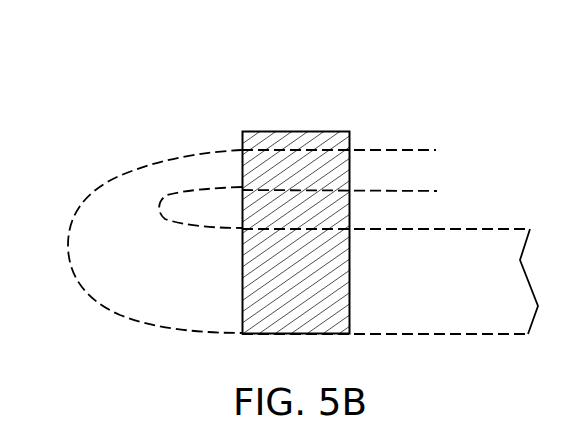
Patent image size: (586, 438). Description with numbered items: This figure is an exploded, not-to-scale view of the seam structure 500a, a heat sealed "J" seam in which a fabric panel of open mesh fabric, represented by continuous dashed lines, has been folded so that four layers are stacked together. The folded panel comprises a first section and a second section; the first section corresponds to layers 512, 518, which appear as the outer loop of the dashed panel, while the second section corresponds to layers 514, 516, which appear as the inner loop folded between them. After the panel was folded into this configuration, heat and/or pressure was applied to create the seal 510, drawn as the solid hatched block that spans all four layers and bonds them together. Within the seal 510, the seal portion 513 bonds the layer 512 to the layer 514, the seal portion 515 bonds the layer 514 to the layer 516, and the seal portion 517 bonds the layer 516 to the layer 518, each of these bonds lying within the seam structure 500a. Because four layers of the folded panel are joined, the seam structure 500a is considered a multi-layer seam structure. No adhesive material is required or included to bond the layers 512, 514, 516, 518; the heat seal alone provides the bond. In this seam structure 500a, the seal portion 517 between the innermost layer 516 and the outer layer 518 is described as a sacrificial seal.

The seam structure 500a is at (133, 83).
The seal 510 is at (291, 124).
The layer 512 is at (350, 150).
The seal portion 513 is at (256, 164).
The layer 514 is at (350, 189).
The seal portion 515 is at (258, 213).
The layer 516 is at (350, 228).
The seal portion 517 is at (255, 298).
The layer 518 is at (350, 332).